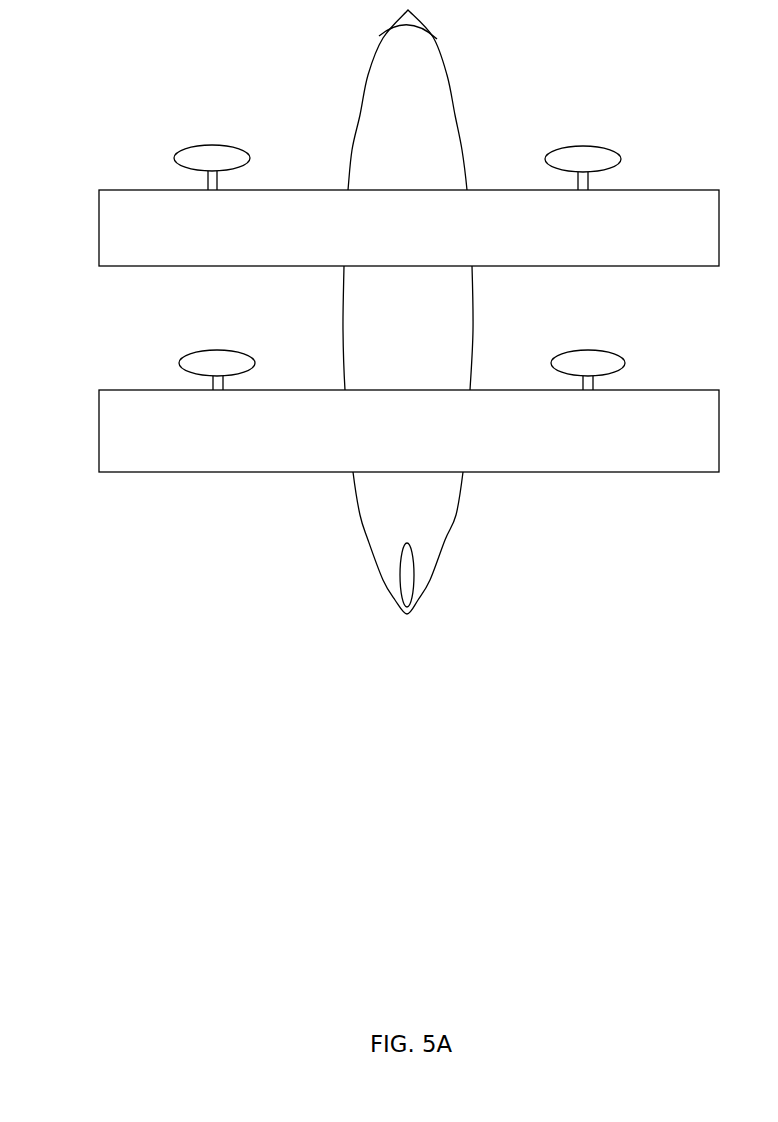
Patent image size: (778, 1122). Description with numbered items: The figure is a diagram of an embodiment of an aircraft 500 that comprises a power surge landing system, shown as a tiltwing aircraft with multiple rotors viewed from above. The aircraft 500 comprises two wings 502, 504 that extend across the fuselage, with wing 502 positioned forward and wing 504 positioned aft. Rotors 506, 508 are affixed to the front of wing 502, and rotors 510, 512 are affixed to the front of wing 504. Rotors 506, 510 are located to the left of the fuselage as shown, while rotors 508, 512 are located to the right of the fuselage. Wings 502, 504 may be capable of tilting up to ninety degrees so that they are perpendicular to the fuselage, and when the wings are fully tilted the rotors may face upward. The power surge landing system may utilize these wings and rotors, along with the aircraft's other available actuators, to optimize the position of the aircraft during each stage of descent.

The aircraft 500 is at (352, 162).
The wing 502 is at (99, 238).
The wing 504 is at (99, 448).
The rotor 506 is at (175, 163).
The rotor 508 is at (552, 168).
The rotor 510 is at (180, 366).
The rotor 512 is at (560, 374).